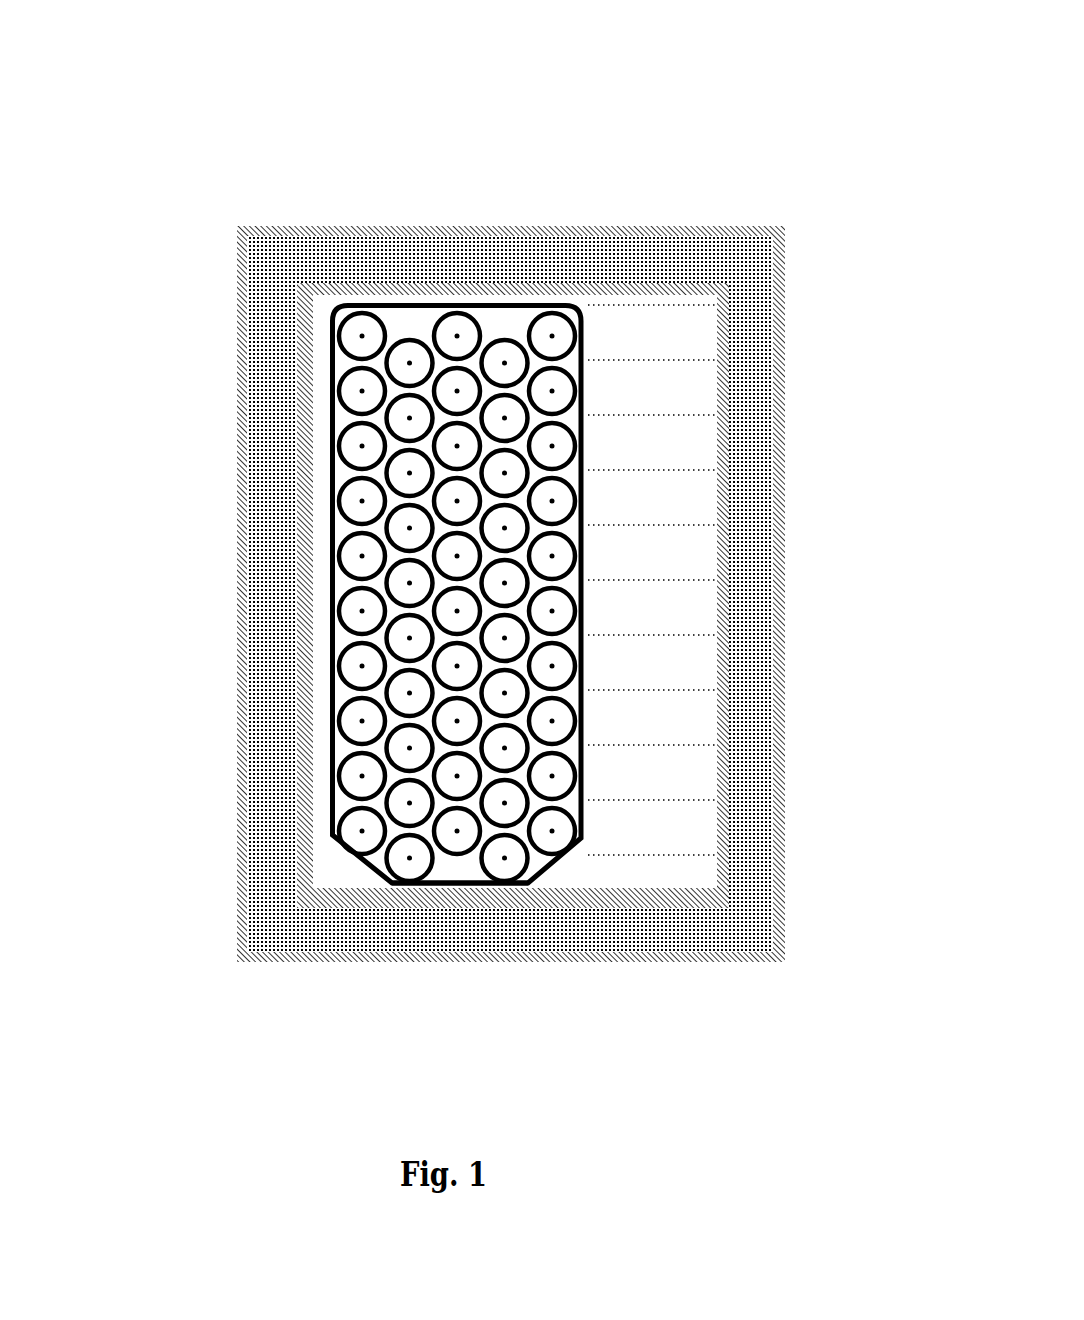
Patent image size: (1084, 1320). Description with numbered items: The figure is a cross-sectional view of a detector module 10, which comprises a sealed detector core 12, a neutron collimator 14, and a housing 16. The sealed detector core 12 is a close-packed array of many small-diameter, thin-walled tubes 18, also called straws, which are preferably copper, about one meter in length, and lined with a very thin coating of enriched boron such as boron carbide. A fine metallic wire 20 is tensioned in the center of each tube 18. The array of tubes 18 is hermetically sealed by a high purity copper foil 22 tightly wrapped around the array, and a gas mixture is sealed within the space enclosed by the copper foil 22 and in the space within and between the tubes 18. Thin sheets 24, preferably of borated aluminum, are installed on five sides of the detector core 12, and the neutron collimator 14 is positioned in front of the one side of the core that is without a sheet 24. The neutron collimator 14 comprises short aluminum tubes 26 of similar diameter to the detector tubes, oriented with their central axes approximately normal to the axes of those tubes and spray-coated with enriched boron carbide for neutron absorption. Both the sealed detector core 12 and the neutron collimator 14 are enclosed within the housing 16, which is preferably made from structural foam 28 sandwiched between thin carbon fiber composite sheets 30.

The detector module 10 is at (495, 544).
The sealed detector core 12 is at (346, 636).
The neutron collimator 14 is at (585, 536).
The housing 16 is at (558, 533).
The tube 18 is at (390, 495).
The metallic wire 20 is at (410, 580).
The copper foil 22 is at (367, 865).
The thin sheet 24 is at (477, 890).
The aluminum tube 26 is at (697, 673).
The structural foam 28 is at (743, 800).
The carbon fiber composite sheet 30 is at (778, 882).